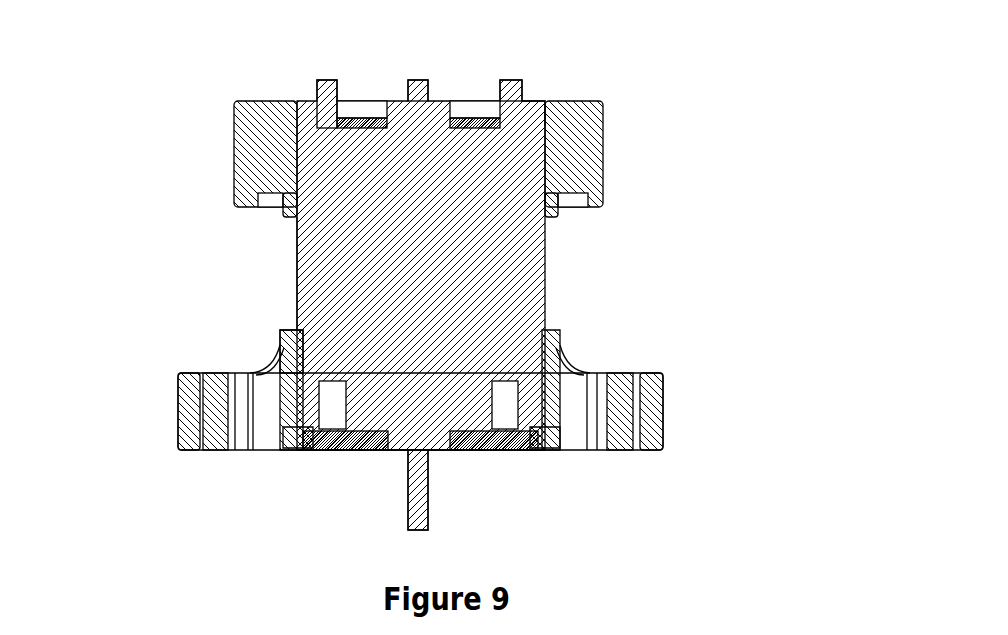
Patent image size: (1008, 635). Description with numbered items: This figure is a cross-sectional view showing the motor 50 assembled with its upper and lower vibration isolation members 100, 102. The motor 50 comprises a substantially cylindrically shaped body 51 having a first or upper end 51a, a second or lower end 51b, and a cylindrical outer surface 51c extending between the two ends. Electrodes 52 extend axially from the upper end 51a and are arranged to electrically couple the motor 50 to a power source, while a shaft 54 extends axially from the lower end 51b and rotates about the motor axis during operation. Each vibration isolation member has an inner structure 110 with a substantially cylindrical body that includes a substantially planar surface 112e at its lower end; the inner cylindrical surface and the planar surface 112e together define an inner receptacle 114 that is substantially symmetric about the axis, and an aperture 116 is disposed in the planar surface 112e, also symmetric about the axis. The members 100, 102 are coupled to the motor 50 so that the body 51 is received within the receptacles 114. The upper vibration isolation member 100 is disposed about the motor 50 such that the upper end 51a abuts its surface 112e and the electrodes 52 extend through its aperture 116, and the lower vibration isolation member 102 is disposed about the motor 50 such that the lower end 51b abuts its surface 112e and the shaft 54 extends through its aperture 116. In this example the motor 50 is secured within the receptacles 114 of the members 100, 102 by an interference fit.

The motor 50 is at (387, 277).
The body 51 is at (387, 277).
The upper end 51a is at (535, 126).
The lower end 51b is at (352, 437).
The cylindrical outer surface 51c is at (297, 262).
The electrodes 52 is at (346, 77).
The shaft 54 is at (404, 467).
The upper vibration isolation member 100 is at (609, 140).
The lower vibration isolation member 102 is at (669, 424).
The inner structure 110 is at (281, 220).
The planar surface 112e is at (311, 125).
The inner receptacle 114 is at (295, 325).
The aperture 116 is at (351, 113).